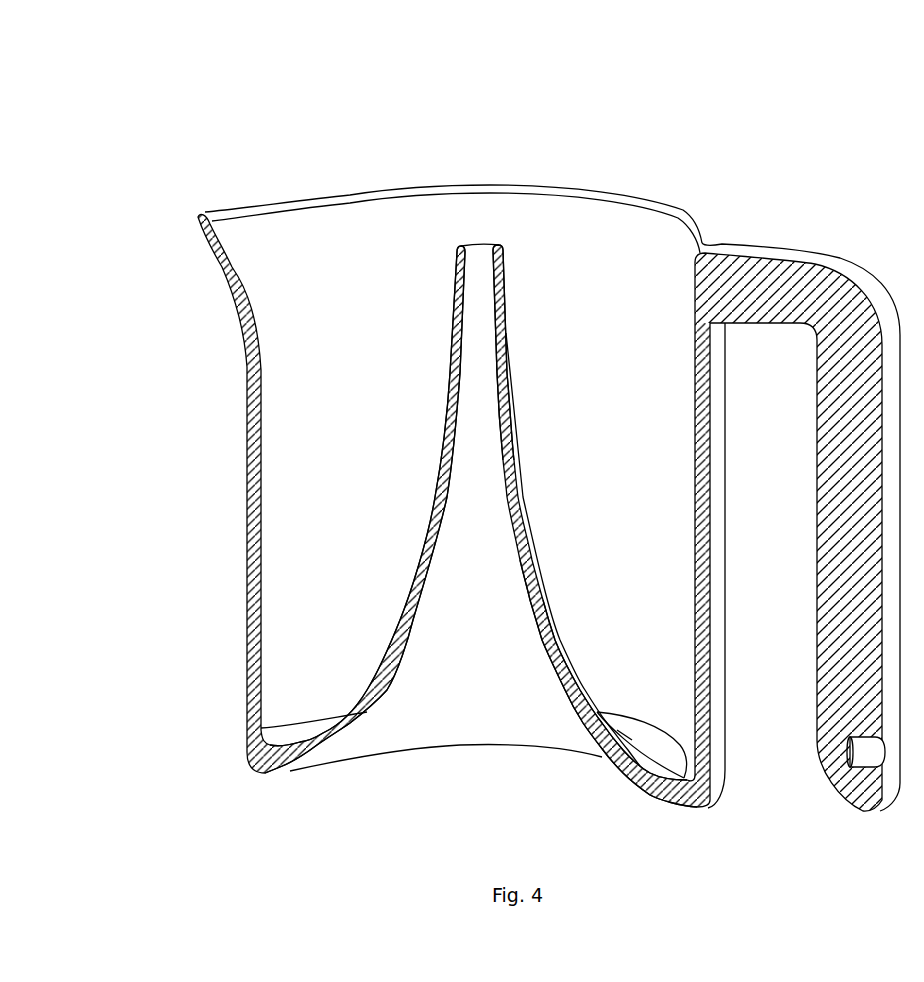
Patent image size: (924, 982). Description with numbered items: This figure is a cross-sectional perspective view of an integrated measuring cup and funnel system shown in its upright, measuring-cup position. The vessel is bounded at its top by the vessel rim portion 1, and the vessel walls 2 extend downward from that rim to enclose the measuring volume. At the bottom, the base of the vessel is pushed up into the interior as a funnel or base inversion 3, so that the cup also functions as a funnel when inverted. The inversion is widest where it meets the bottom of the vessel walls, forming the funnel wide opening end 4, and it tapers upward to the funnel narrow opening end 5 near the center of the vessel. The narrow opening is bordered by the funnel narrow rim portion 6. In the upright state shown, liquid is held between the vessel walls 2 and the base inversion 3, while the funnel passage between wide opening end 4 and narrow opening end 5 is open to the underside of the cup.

The vessel rim portion 1 is at (290, 214).
The vessel walls 2 is at (247, 532).
The funnel or base inversion 3 is at (428, 547).
The funnel wide opening end 4 is at (620, 767).
The funnel narrow opening end 5 is at (478, 242).
The funnel narrow rim portion 6 is at (508, 243).